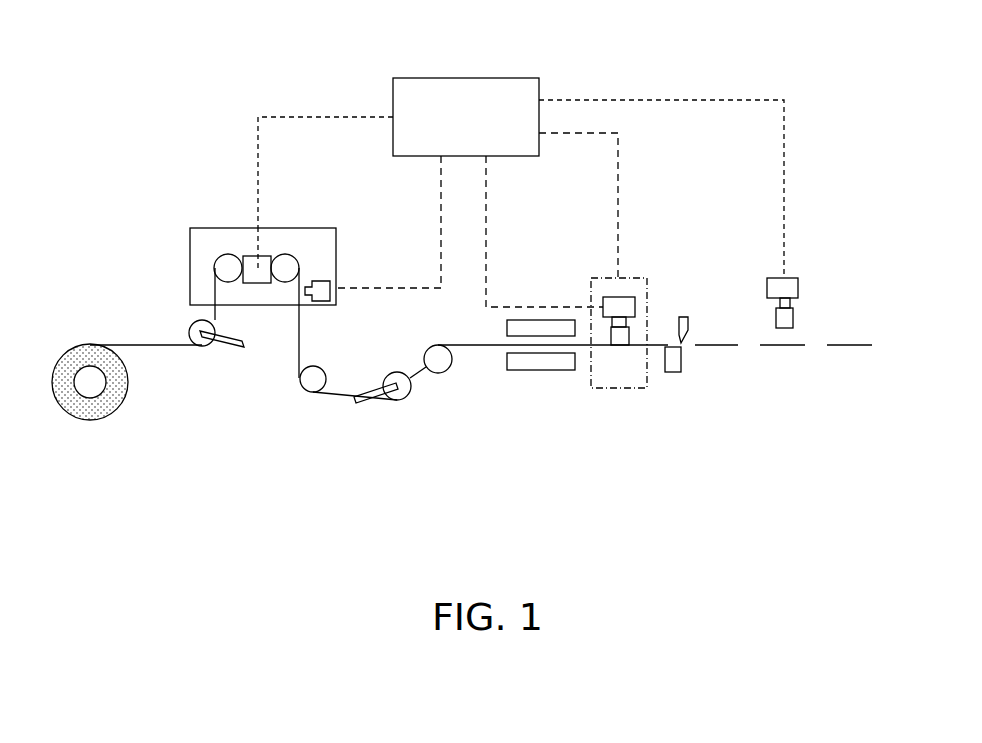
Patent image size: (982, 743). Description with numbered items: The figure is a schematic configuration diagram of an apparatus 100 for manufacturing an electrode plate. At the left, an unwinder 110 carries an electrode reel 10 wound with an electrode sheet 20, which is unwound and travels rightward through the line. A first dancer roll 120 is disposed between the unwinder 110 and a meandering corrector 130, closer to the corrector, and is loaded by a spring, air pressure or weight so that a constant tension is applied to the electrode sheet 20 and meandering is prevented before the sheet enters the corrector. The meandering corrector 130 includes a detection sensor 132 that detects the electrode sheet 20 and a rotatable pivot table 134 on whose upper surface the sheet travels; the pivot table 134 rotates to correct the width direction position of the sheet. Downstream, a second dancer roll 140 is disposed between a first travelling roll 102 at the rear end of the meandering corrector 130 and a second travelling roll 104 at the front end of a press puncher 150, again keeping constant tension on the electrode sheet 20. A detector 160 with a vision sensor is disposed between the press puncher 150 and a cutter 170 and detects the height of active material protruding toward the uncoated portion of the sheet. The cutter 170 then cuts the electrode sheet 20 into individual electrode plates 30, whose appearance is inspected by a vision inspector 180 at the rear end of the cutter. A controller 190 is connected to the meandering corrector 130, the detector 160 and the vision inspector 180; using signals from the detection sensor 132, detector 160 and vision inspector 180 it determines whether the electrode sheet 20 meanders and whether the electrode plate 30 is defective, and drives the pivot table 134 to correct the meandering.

The apparatus for manufacturing an electrode plate 100 is at (213, 35).
The electrode reel 10 is at (118, 402).
The unwinder 110 is at (92, 434).
The electrode sheet 20 is at (146, 342).
The first dancer roll 120 is at (203, 347).
The meandering corrector 130 is at (172, 256).
The detection sensor 132 is at (321, 281).
The pivot table 134 is at (252, 256).
The first travelling roll 102 is at (313, 393).
The second dancer roll 140 is at (400, 400).
The second travelling roll 104 is at (441, 372).
The press puncher 150 is at (544, 371).
The detector 160 is at (635, 305).
The cutter 170 is at (676, 373).
The electrode plate 30 is at (784, 348).
The vision inspector 180 is at (792, 287).
The controller 190 is at (462, 78).